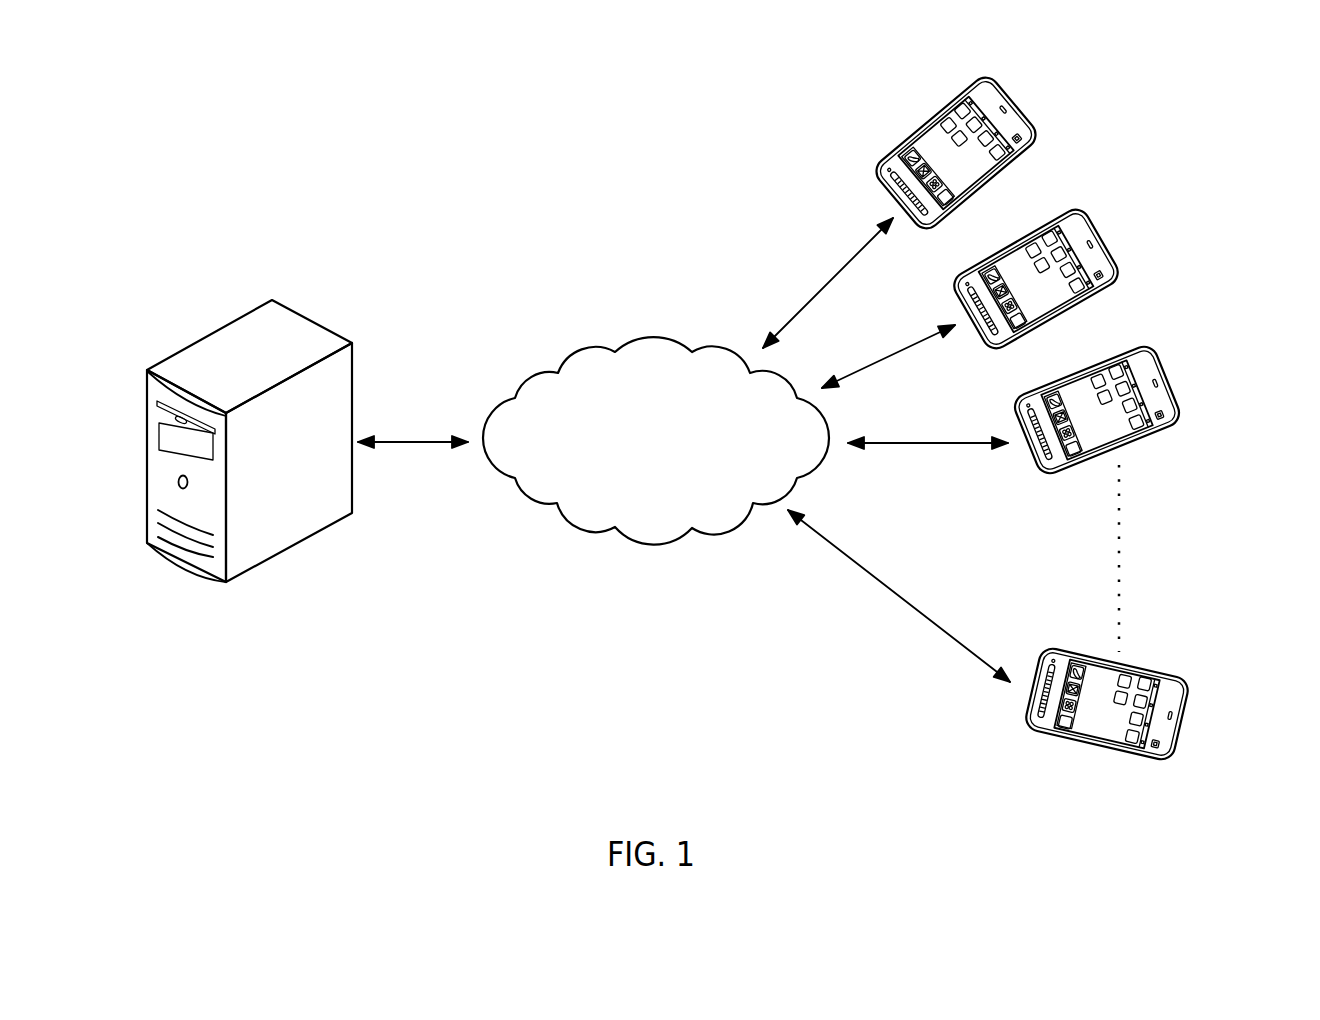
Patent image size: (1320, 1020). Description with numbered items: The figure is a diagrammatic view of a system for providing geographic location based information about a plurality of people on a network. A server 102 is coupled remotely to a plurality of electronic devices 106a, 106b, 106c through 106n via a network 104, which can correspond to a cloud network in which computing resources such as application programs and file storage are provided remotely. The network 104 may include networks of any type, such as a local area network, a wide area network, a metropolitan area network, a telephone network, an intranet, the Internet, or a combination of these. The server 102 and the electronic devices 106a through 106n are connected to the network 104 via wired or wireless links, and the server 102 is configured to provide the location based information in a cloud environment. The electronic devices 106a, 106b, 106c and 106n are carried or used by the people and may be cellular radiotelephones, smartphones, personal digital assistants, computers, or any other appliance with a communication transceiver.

The server 102 is at (240, 317).
The network 104 is at (548, 373).
The electronic device 106a is at (1020, 103).
The electronic device 106b is at (1107, 245).
The electronic device 106c is at (1175, 384).
The electronic device 106n is at (1188, 707).